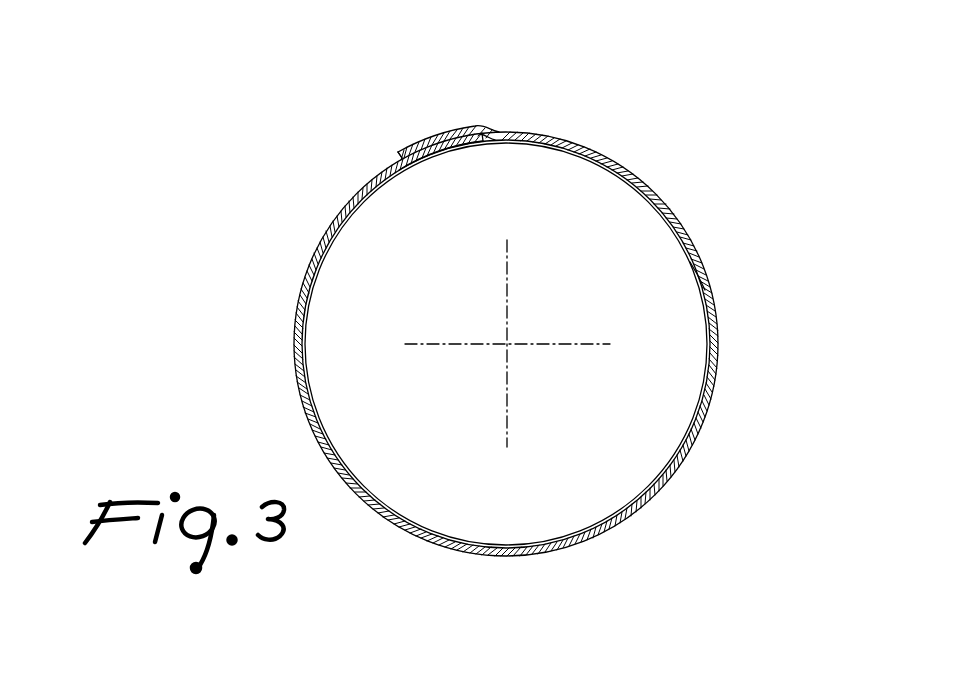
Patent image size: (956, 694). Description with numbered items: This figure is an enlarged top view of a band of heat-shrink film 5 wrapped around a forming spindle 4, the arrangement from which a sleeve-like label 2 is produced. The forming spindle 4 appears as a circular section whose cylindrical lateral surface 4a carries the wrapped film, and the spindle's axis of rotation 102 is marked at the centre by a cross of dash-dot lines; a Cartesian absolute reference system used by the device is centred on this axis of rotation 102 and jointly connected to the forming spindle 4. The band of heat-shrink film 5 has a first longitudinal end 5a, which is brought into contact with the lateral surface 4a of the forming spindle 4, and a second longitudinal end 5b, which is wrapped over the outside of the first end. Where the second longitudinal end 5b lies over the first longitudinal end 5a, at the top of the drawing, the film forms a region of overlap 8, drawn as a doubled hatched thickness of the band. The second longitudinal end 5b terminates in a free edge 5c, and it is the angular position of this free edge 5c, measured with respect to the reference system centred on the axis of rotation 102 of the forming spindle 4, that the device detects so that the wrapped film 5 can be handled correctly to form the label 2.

The sleeve-like label 2 is at (326, 237).
The forming spindle 4 is at (588, 186).
The lateral surface of the forming spindle 4a is at (706, 282).
The heat-shrink film 5 is at (675, 195).
The first longitudinal end 5a is at (438, 178).
The second longitudinal end 5b is at (433, 122).
The free edge 5c is at (398, 152).
The region of overlap 8 is at (415, 112).
The axis of rotation 102 is at (517, 358).